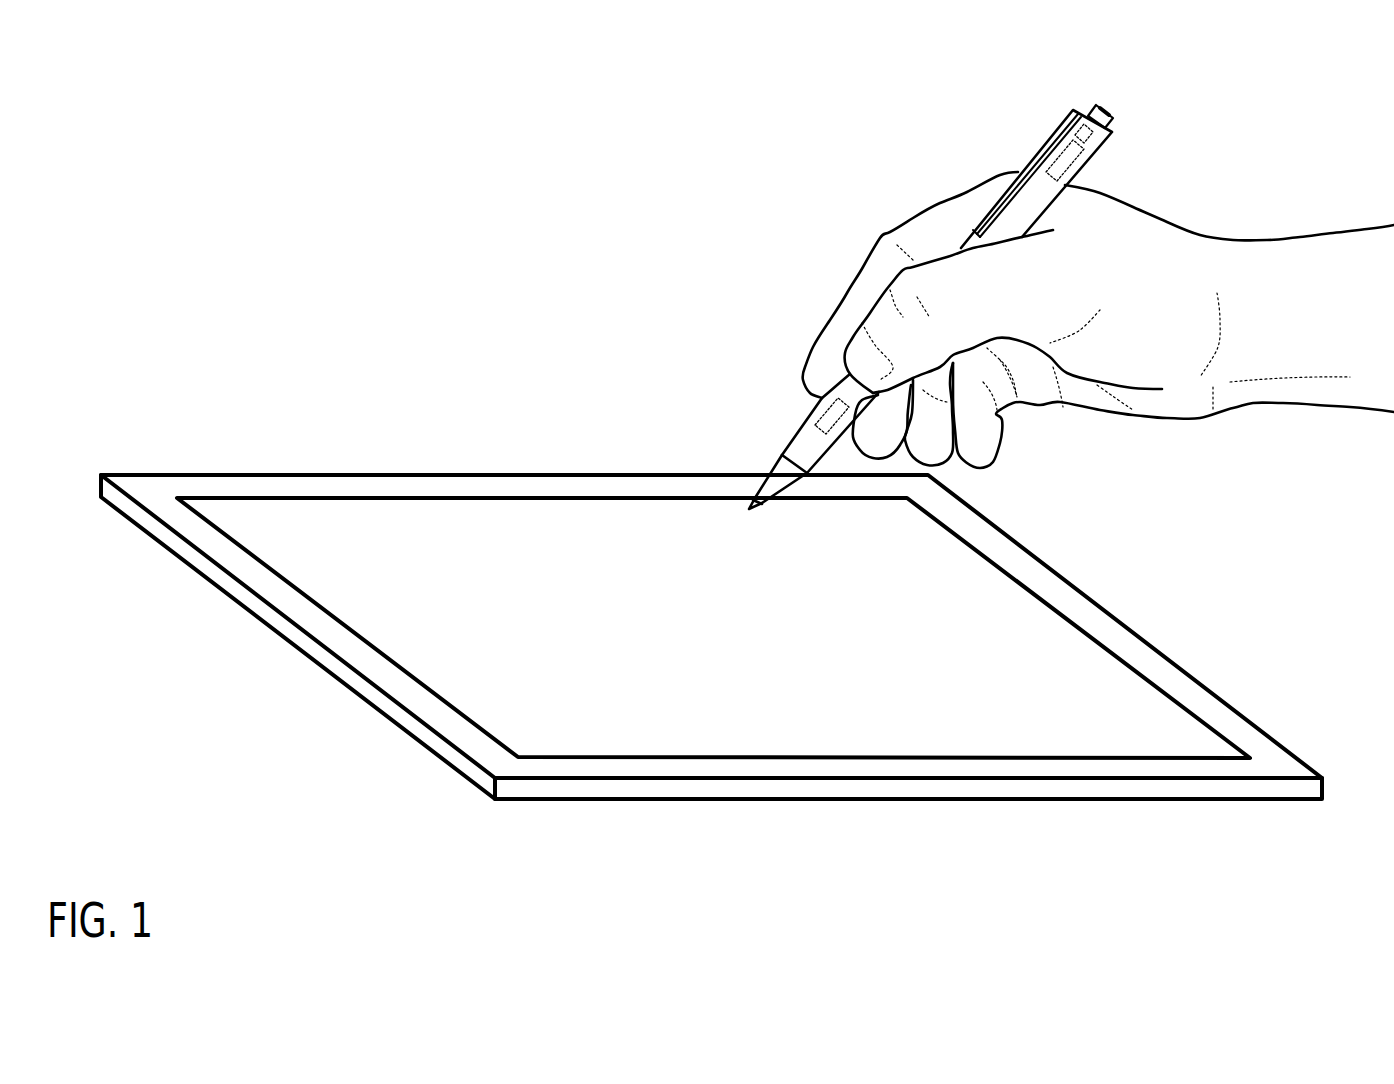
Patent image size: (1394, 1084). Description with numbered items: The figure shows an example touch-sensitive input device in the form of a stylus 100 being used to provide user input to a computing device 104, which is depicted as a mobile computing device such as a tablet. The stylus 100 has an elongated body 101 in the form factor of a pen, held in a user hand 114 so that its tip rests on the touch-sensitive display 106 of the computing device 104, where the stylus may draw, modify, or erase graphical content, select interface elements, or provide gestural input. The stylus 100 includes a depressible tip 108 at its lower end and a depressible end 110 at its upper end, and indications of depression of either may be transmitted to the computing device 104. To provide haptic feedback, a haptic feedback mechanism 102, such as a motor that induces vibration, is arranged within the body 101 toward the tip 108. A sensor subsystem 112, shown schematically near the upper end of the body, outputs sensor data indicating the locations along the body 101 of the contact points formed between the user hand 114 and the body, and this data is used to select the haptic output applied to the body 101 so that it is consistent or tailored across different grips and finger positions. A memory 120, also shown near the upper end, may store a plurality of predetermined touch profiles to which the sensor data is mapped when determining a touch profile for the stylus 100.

The stylus 100 is at (1072, 210).
The elongated body 101 is at (1032, 153).
The haptic feedback mechanism 102 is at (815, 413).
The computing device 104 is at (1323, 778).
The touch-sensitive display 106 is at (903, 533).
The depressible tip 108 is at (757, 514).
The depressible end 110 is at (1105, 104).
The sensor subsystem 112 is at (1077, 168).
The user hand 114 is at (878, 238).
The memory 120 is at (1093, 133).